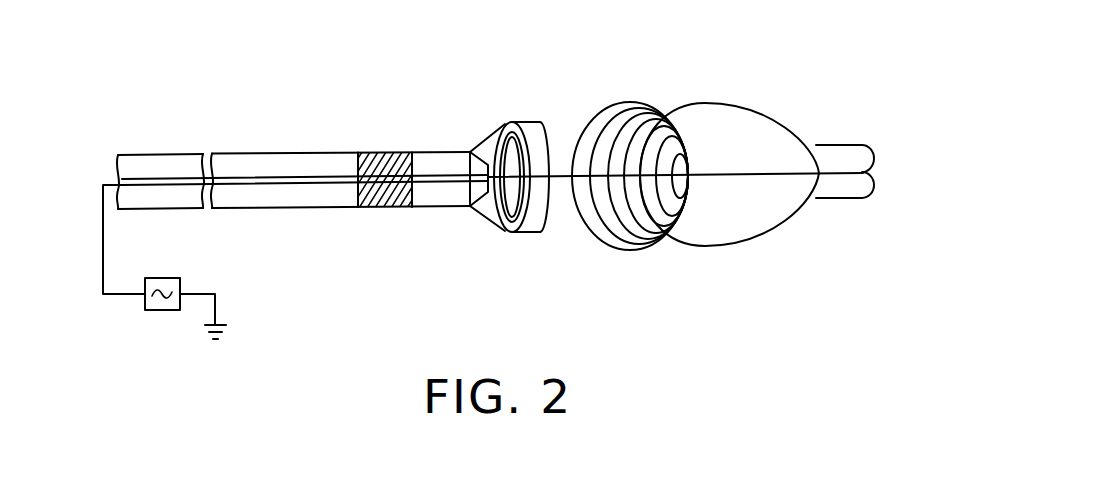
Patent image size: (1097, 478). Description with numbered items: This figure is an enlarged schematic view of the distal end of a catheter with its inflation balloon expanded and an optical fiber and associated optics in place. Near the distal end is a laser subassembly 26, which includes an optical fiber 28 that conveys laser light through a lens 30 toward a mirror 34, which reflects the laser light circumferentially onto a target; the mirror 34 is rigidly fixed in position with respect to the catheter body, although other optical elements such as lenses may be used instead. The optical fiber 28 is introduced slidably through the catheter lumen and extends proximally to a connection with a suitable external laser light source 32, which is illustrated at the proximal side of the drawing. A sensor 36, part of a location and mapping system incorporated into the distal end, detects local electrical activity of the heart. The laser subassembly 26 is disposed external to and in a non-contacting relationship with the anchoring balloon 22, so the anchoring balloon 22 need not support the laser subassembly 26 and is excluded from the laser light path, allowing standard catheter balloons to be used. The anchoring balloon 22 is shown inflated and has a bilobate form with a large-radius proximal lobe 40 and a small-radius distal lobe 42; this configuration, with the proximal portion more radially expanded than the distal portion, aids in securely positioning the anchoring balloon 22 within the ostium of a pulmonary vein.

The anchoring balloon 22 is at (752, 242).
The laser subassembly 26 is at (492, 272).
The optical fiber 28 is at (292, 172).
The lens 30 is at (487, 218).
The laser light source 32 is at (163, 278).
The mirror 34 is at (510, 120).
The sensor 36 is at (375, 153).
The large-radius proximal lobe 40 is at (610, 250).
The small-radius distal lobe 42 is at (740, 104).